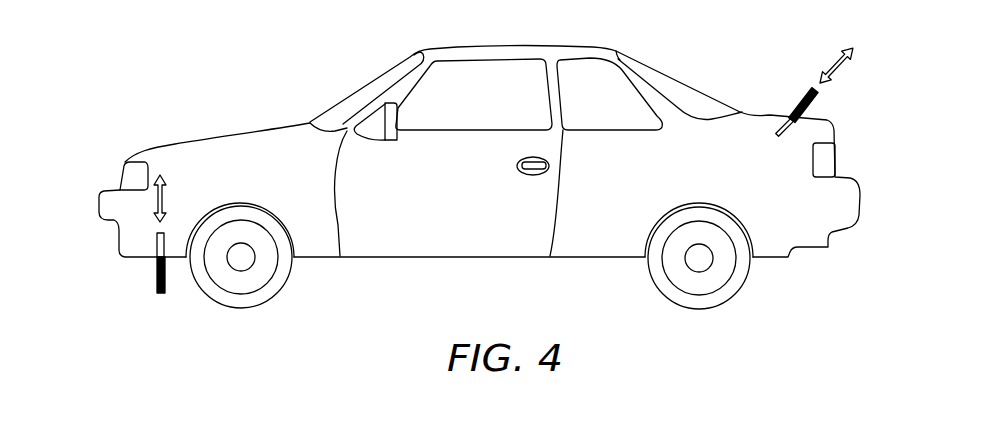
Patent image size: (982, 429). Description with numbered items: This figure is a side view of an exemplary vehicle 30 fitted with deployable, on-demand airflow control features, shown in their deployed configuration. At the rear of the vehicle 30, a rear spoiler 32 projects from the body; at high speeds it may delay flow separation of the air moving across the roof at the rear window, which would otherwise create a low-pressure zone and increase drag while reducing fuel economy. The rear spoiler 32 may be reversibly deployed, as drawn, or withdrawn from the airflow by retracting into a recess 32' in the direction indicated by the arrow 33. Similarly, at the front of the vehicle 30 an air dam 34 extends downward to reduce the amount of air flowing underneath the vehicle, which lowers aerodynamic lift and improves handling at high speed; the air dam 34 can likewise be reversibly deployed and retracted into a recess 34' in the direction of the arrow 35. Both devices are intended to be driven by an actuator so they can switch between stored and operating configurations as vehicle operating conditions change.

The vehicle 30 is at (682, 75).
The rear spoiler 32 is at (834, 105).
The recess 32' is at (781, 163).
The arrow 33 is at (837, 66).
The front air dam 34 is at (120, 280).
The recess 34' is at (199, 220).
The arrow 35 is at (163, 198).